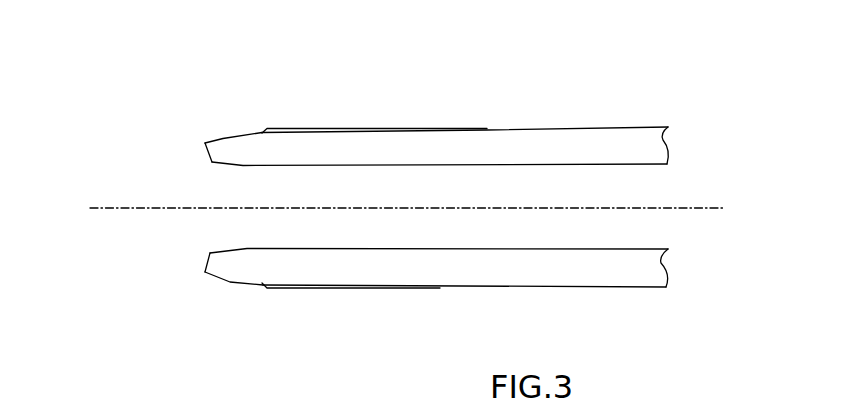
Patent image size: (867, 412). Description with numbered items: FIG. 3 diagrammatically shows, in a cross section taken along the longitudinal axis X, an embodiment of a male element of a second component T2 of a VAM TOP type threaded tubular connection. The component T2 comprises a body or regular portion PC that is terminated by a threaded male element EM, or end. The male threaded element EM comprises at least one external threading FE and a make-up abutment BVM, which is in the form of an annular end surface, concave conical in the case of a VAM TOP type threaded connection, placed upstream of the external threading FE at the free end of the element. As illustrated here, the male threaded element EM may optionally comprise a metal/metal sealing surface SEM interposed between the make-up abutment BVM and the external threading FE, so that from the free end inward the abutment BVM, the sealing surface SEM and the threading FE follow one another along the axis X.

The longitudinal axis X is at (403, 206).
The body or regular portion PC is at (663, 135).
The male threaded element EM is at (507, 127).
The external threading FE is at (322, 128).
The metal/metal sealing surface SEM is at (223, 138).
The make-up abutment BVM is at (205, 147).
The second component T2 is at (681, 268).